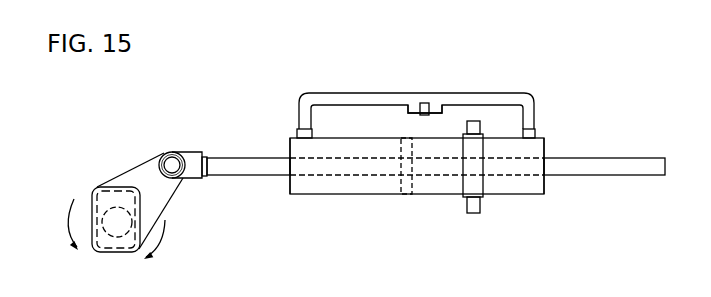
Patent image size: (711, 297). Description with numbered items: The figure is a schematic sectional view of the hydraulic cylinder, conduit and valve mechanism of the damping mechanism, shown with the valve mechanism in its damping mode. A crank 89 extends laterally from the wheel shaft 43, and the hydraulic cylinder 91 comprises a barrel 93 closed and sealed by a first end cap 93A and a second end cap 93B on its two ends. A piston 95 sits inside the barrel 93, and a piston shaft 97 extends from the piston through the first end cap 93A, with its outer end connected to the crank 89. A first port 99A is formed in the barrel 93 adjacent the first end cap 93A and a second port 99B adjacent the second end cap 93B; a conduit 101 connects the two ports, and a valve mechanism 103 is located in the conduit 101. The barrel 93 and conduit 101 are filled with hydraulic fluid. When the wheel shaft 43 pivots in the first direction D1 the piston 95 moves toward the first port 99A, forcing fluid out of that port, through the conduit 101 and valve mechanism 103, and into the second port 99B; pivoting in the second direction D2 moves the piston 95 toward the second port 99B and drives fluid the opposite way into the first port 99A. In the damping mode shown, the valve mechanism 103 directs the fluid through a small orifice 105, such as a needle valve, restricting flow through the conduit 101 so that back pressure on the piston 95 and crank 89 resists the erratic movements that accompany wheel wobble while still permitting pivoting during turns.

The wheel shaft 43 is at (117, 237).
The crank 89 is at (163, 205).
The hydraulic cylinder 91 is at (417, 156).
The barrel 93 is at (432, 194).
The first end cap 93A is at (290, 183).
The second end cap 93B is at (545, 184).
The piston 95 is at (412, 148).
The piston shaft 97 is at (352, 158).
The first port 99A is at (297, 131).
The second port 99B is at (537, 137).
The conduit 101 is at (396, 93).
The valve mechanism 103 is at (420, 101).
The small orifice 105 is at (424, 118).
The first direction D1 is at (73, 213).
The second direction D2 is at (162, 240).